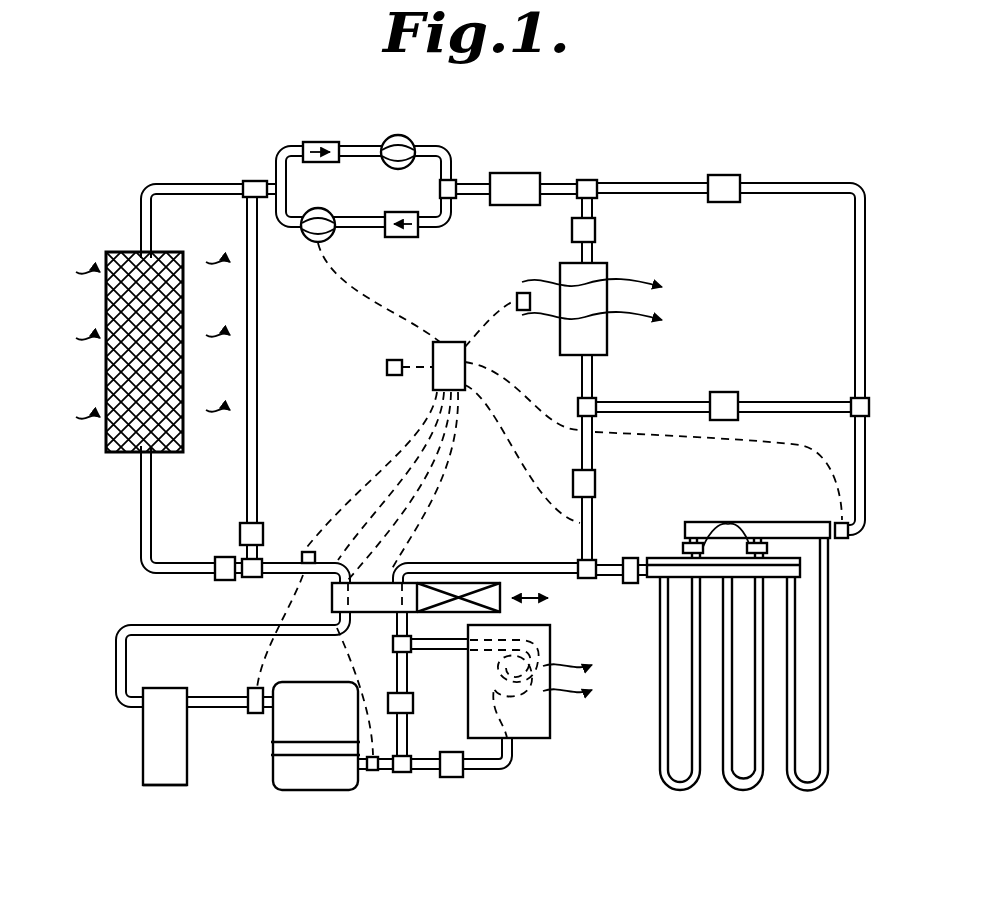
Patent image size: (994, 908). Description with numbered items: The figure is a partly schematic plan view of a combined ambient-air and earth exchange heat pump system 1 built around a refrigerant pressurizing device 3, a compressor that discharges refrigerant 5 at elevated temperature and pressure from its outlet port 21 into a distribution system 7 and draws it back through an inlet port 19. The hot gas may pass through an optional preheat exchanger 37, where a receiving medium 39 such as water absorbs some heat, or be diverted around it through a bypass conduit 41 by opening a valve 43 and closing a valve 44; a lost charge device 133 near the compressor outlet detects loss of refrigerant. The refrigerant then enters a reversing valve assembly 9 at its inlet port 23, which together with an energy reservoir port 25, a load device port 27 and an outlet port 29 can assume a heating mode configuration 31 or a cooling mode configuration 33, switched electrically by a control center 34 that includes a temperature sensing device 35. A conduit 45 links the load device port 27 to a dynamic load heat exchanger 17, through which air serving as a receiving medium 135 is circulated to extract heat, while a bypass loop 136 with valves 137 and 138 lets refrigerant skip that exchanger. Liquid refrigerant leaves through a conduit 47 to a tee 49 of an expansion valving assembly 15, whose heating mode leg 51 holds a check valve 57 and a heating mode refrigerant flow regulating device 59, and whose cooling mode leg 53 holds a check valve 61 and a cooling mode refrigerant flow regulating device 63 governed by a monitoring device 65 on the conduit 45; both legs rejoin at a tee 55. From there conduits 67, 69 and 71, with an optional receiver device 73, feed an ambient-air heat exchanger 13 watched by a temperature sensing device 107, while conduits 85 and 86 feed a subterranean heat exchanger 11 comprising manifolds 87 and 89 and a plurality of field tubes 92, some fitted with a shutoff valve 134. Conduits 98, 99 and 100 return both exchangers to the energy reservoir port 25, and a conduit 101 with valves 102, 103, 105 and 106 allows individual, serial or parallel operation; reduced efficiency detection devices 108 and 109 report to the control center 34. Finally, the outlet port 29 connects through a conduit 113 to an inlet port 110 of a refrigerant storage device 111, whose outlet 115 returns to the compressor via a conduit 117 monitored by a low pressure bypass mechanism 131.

The combined ambient-air and earth exchange heat pump system 1 is at (98, 556).
The refrigerant pressurizing device 3 is at (273, 781).
The refrigerant 5 is at (455, 651).
The distribution system 7 is at (152, 492).
The reversing valve assembly 9 is at (416, 612).
The subterranean heat exchanger 11 is at (756, 651).
The ambient-air heat exchanger 13 is at (560, 352).
The expansion valving assembly 15 is at (356, 185).
The dynamic load heat exchanger 17 is at (110, 452).
The inlet port 19 is at (283, 741).
The outlet port 21 is at (366, 782).
The inlet port 23 is at (410, 617).
The energy reservoir port 25 is at (394, 572).
The load device port 27 is at (358, 572).
The outlet port 29 is at (338, 618).
The heating mode configuration 31 is at (522, 568).
The cooling mode configuration 33 is at (348, 586).
The control center 34 is at (452, 342).
The temperature sensing device 35 is at (387, 368).
The preheat exchanger 37 is at (550, 738).
The receiving medium 39 is at (530, 693).
The bypass conduit 41 is at (408, 742).
The valve 43 is at (413, 702).
The valve 44 is at (455, 777).
The conduit 45 is at (176, 575).
The conduit 47 is at (196, 183).
The tee 49 is at (262, 182).
The heating mode leg 51 is at (362, 158).
The cooling mode leg 53 is at (345, 230).
The tee 55 is at (452, 180).
The check valve 57 is at (310, 142).
The heating mode refrigerant flow regulating device 59 is at (406, 136).
The check valve 61 is at (418, 231).
The cooling mode refrigerant flow regulating device 63 is at (308, 240).
The monitoring device 65 is at (306, 552).
The conduit 67 is at (472, 195).
The conduit 69 is at (576, 182).
The conduit 71 is at (594, 254).
The receiver device 73 is at (505, 173).
The conduit 85 is at (683, 183).
The conduit 86 is at (868, 440).
The manifold 87 is at (700, 522).
The manifold 89 is at (673, 558).
The field tubes 92 is at (660, 700).
The conduit 98 is at (588, 576).
The conduit 99 is at (572, 567).
The conduit 100 is at (594, 508).
The conduit 101 is at (616, 402).
The valve 102 is at (572, 228).
The valve 103 is at (732, 175).
The valve 105 is at (737, 392).
The valve 106 is at (596, 476).
The temperature sensing device 107 is at (517, 299).
The reduced efficiency detection device 108 is at (632, 584).
The reduced efficiency detection device 109 is at (845, 540).
The inlet port 110 is at (130, 710).
The refrigerant storage device 111 is at (145, 785).
The conduit 113 is at (178, 625).
The outlet 115 is at (192, 690).
The conduit 117 is at (232, 697).
The low pressure bypass mechanism 131 is at (260, 688).
The lost charge device 133 is at (379, 772).
The shutoff valve 134 is at (732, 517).
The receiving medium 135 is at (88, 270).
The bypass loop 136 is at (257, 340).
The valve 137 is at (243, 522).
The valve 138 is at (219, 557).